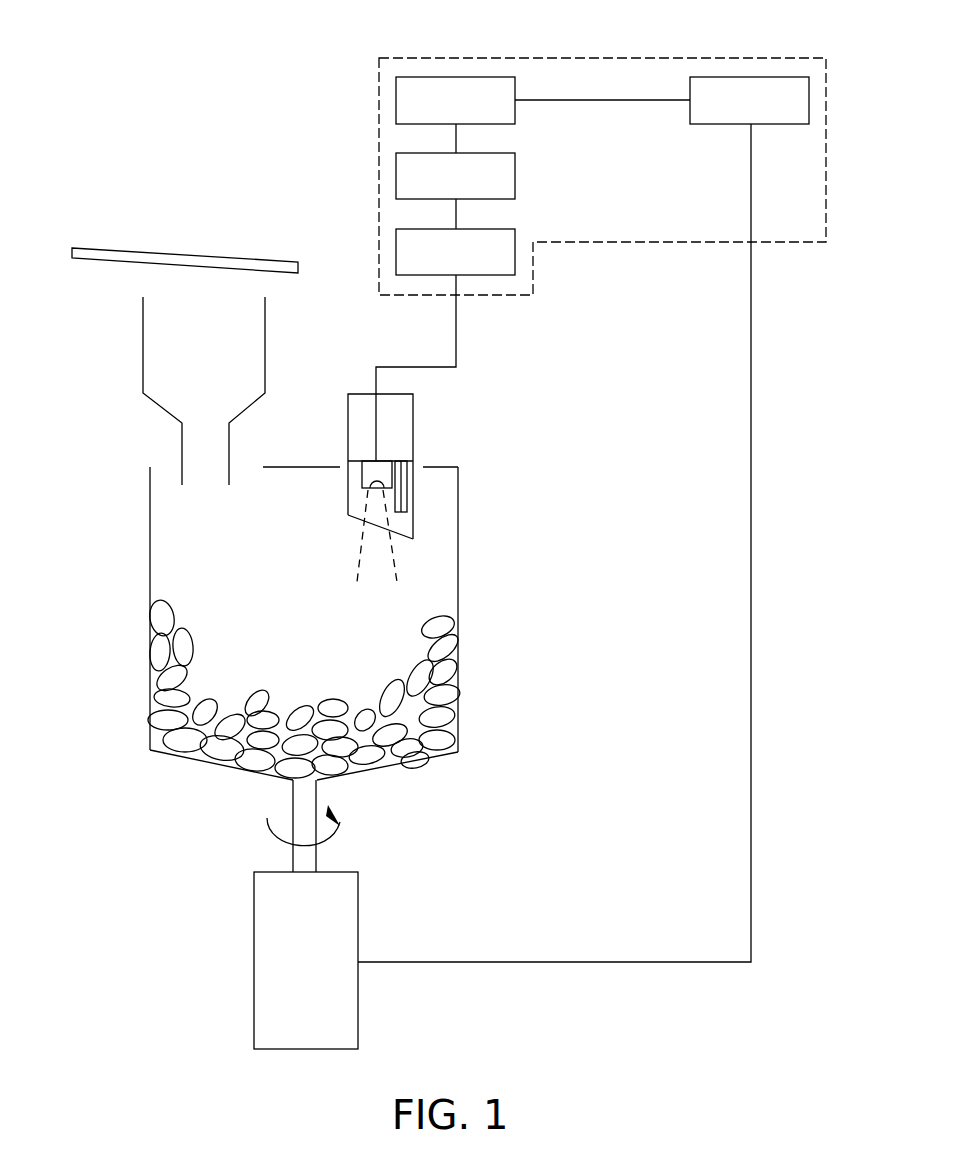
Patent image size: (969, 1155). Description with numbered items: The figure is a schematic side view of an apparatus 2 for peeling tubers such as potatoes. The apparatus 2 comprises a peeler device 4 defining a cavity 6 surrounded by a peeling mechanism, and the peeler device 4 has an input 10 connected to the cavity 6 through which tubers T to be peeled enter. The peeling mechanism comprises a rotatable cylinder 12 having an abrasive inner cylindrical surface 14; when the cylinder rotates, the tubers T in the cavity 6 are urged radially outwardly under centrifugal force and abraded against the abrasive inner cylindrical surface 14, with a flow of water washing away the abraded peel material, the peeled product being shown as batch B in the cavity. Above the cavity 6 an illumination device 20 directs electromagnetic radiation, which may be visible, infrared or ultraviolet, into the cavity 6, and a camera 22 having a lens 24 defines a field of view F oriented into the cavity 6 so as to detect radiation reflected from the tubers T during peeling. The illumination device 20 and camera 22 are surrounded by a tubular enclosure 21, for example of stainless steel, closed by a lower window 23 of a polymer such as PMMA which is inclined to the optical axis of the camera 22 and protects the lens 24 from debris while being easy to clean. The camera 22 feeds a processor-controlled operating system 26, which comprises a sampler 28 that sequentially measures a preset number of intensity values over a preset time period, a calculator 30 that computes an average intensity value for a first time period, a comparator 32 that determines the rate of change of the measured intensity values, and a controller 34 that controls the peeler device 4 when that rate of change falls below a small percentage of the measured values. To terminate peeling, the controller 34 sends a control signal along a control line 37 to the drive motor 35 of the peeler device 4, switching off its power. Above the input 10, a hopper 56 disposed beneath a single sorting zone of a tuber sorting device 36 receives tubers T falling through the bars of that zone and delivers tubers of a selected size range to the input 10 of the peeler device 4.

The apparatus 2 is at (645, 596).
The peeler device 4 is at (462, 722).
The cavity 6 is at (455, 633).
The input 10 is at (165, 475).
The rotatable cylinder 12 is at (460, 545).
The abrasive inner cylindrical surface 14 is at (460, 715).
The illumination device 20 is at (407, 498).
The tubular enclosure 21 is at (348, 410).
The camera 22 is at (380, 470).
The lower window 23 is at (352, 518).
The lens 24 is at (383, 480).
The processor-controlled operating system 26 is at (586, 248).
The sampler 28 is at (396, 243).
The calculator 30 is at (396, 177).
The comparator 32 is at (396, 100).
The controller 34 is at (752, 77).
The drive motor 35 is at (254, 958).
The tuber sorting device 36 is at (118, 248).
The control line 37 is at (750, 402).
The hopper 56 is at (143, 353).
The beans B is at (462, 657).
The field of view F is at (397, 563).
The tubers T is at (160, 620).